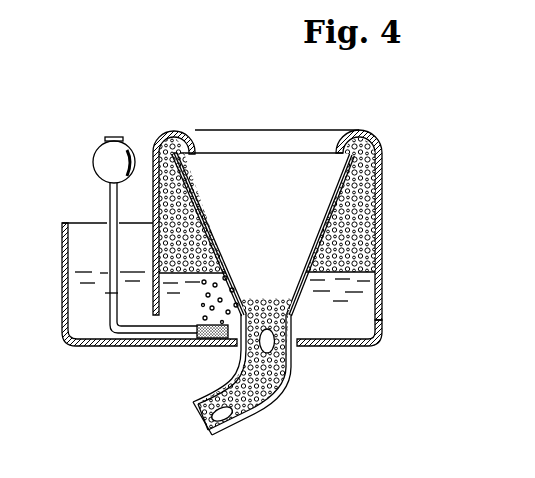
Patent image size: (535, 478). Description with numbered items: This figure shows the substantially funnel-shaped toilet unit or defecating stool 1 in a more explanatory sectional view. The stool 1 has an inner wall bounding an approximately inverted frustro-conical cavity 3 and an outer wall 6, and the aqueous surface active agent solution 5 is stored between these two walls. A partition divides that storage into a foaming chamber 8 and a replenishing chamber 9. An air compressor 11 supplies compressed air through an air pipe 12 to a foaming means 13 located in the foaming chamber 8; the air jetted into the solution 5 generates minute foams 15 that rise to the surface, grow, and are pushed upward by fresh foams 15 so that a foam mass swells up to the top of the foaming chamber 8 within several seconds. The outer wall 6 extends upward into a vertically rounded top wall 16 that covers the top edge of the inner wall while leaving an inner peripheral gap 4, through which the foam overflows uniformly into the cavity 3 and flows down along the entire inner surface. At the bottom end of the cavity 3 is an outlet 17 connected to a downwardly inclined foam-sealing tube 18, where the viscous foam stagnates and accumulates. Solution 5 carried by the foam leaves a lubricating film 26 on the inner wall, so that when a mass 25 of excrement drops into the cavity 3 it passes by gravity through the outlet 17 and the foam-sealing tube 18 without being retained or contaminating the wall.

The toilet unit or defecating stool 1 is at (383, 172).
The cavity 3 is at (277, 263).
The inner peripheral gap 4 is at (347, 158).
The aqueous surface active agent solution 5 is at (355, 317).
The outer wall 6 is at (379, 244).
The foaming chamber 8 is at (376, 207).
The replenishing chamber 9 is at (82, 260).
The air compressor 11 is at (97, 150).
The air pipe 12 is at (108, 213).
The foaming means 13 is at (204, 339).
The minute foams 15 is at (190, 310).
The vertically rounded top wall 16 is at (172, 133).
The outlet 17 is at (317, 345).
The foam-sealing tube 18 is at (260, 410).
The mass of excrement 25 is at (292, 378).
The film of aqueous surface active agent solution 26 is at (214, 220).